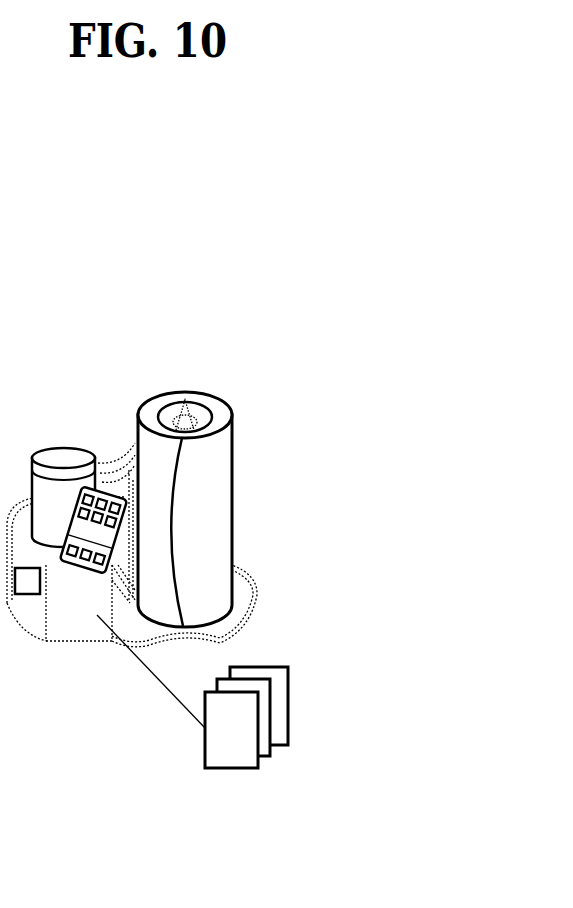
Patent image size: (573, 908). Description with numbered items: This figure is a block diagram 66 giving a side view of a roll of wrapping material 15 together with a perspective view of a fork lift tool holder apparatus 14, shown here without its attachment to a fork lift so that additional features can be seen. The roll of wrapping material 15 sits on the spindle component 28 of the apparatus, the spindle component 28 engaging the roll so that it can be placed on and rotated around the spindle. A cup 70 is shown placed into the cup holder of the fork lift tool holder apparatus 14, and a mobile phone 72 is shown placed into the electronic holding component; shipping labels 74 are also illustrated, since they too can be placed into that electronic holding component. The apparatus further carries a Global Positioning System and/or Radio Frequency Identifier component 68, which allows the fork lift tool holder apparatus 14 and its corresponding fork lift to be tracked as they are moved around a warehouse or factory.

The block diagram 66 is at (497, 140).
The spindle component 28 is at (182, 407).
The roll of wrapping material 15 is at (232, 418).
The cup 70 is at (63, 458).
The fork lift tool holder apparatus 14 is at (255, 585).
The Radio Frequency Identifier (RFID) component 68 is at (32, 588).
The mobile phone 72 is at (77, 575).
The shipping labels 74 is at (230, 770).